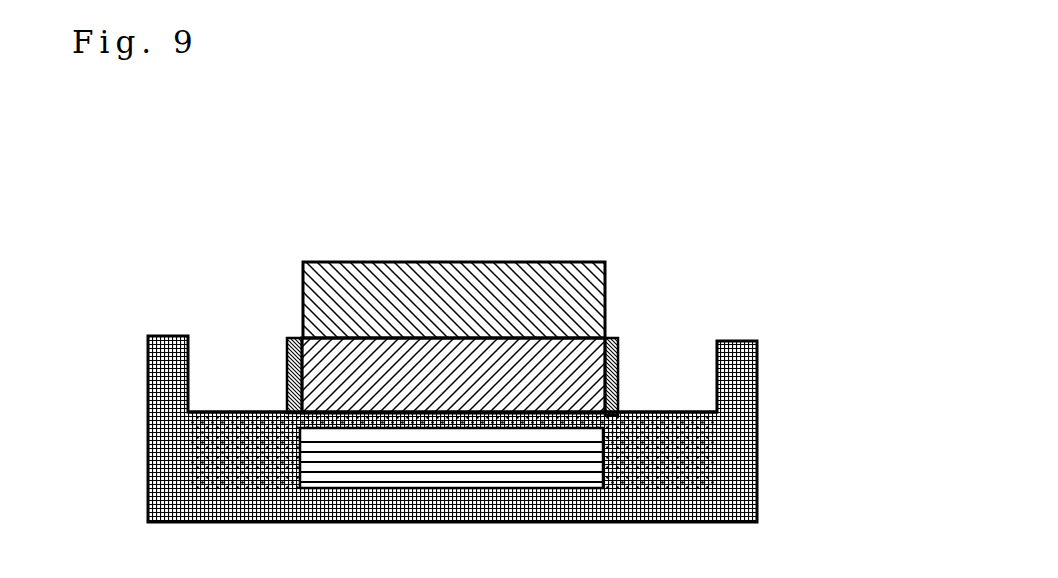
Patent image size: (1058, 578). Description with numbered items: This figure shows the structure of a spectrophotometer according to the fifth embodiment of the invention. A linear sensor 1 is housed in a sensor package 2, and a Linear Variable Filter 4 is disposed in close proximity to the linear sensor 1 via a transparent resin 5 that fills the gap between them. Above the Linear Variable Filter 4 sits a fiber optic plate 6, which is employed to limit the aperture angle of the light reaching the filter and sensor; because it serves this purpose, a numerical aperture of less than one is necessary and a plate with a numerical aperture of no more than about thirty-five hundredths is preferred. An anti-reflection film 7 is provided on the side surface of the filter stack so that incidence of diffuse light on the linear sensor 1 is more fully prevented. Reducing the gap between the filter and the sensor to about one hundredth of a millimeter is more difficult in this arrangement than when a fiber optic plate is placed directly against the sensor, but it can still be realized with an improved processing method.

The linear sensor 1 is at (587, 468).
The sensor package 2 is at (727, 503).
The Linear Variable Filter 4 is at (607, 367).
The transparent resin 5 is at (670, 440).
The fiber optic plate 6 is at (552, 287).
The anti-reflection film 7 is at (288, 338).